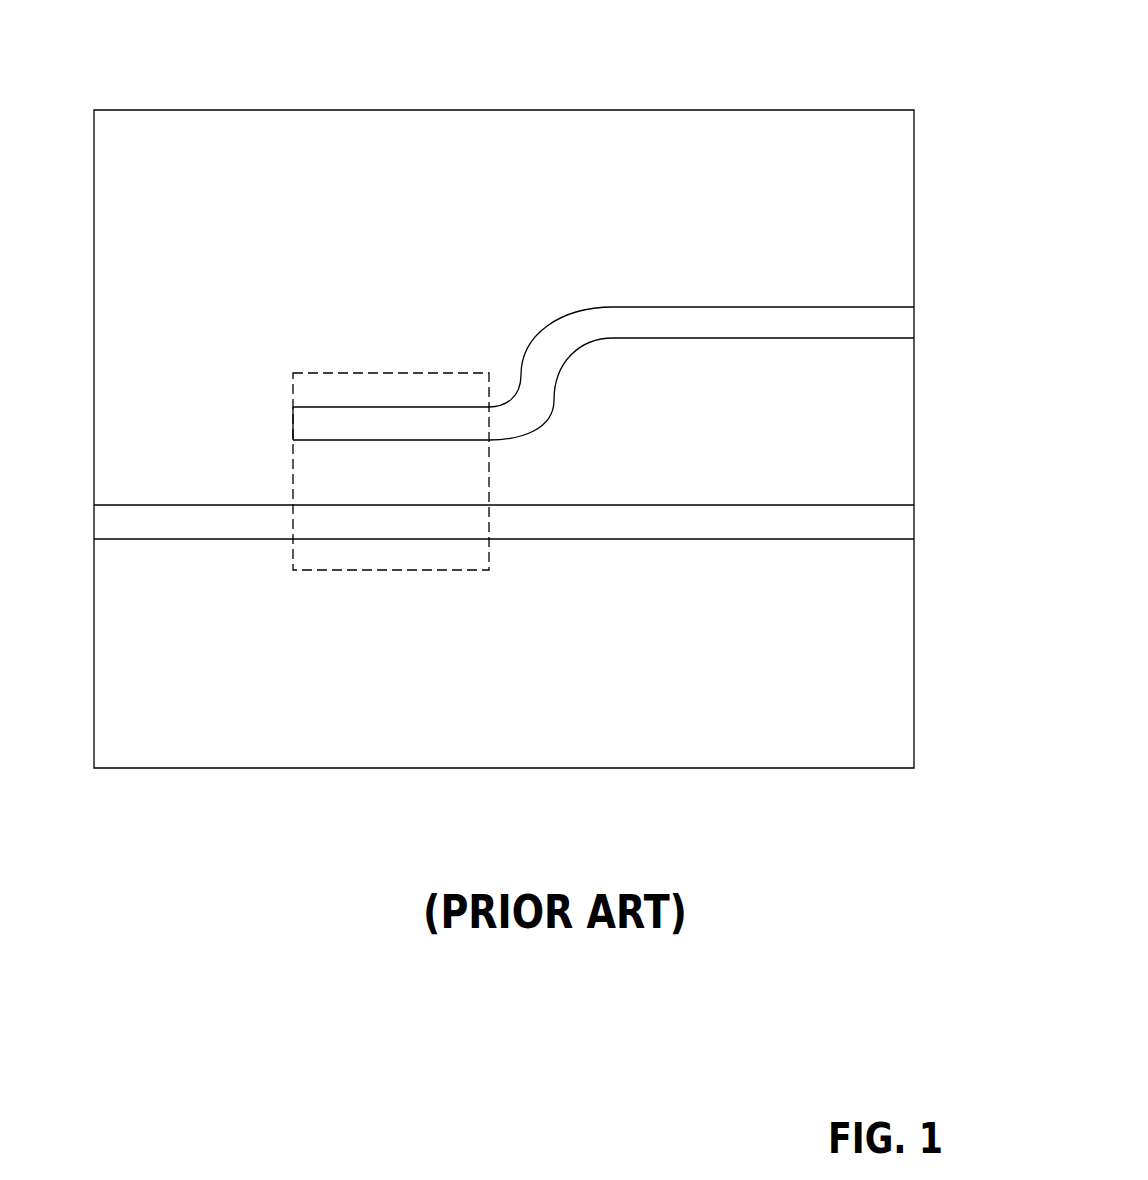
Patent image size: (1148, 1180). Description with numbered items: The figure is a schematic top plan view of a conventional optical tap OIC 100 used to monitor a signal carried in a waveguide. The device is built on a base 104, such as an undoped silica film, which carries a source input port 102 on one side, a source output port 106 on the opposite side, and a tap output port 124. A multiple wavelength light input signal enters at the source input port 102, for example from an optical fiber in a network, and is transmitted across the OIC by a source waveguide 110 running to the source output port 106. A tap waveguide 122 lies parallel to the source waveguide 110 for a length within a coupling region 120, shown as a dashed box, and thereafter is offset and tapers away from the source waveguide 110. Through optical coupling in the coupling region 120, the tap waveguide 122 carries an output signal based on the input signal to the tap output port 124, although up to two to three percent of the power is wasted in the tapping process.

The optical tap OIC 100 is at (817, 44).
The source input port 102 is at (96, 530).
The base 104 is at (325, 735).
The source output port 106 is at (915, 520).
The source waveguide 110 is at (238, 533).
The coupling region 120 is at (392, 373).
The tap waveguide 122 is at (751, 327).
The tap output port 124 is at (915, 317).